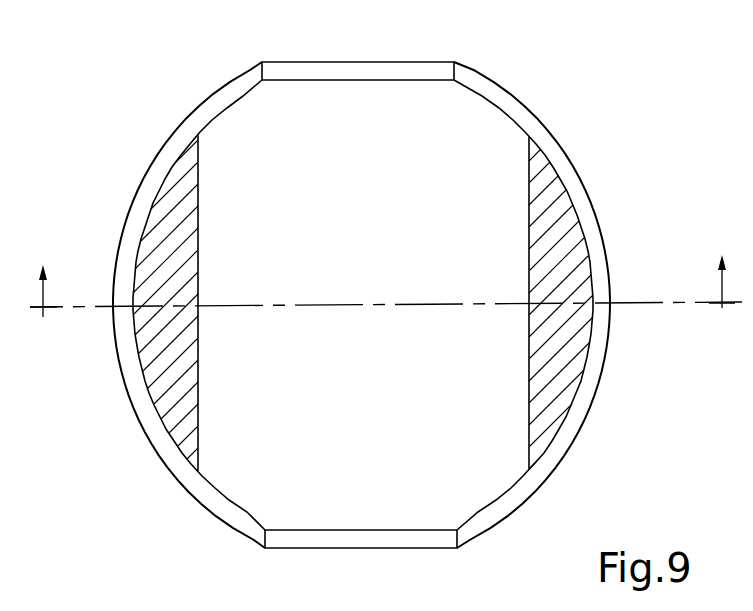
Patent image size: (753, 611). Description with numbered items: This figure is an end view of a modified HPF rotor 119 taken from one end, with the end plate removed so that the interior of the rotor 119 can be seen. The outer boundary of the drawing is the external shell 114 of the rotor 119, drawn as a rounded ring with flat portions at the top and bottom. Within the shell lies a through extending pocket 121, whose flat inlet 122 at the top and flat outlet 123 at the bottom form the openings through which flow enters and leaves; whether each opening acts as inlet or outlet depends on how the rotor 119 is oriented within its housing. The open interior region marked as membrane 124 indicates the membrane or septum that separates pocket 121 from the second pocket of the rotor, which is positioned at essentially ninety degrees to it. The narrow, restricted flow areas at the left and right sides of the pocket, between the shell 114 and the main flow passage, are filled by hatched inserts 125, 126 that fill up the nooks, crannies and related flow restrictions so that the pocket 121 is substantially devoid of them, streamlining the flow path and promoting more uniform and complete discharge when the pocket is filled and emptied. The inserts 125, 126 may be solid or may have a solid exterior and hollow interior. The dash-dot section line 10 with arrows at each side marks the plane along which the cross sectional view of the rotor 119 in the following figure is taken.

The rotor 119 is at (580, 111).
The external shell 114 is at (147, 166).
The pocket 121 is at (386, 98).
The inlet 122 is at (340, 70).
The outlet 123 is at (386, 535).
The membrane 124 is at (262, 470).
The insert 125 is at (192, 271).
The insert 126 is at (536, 271).
The section line 10 is at (382, 267).